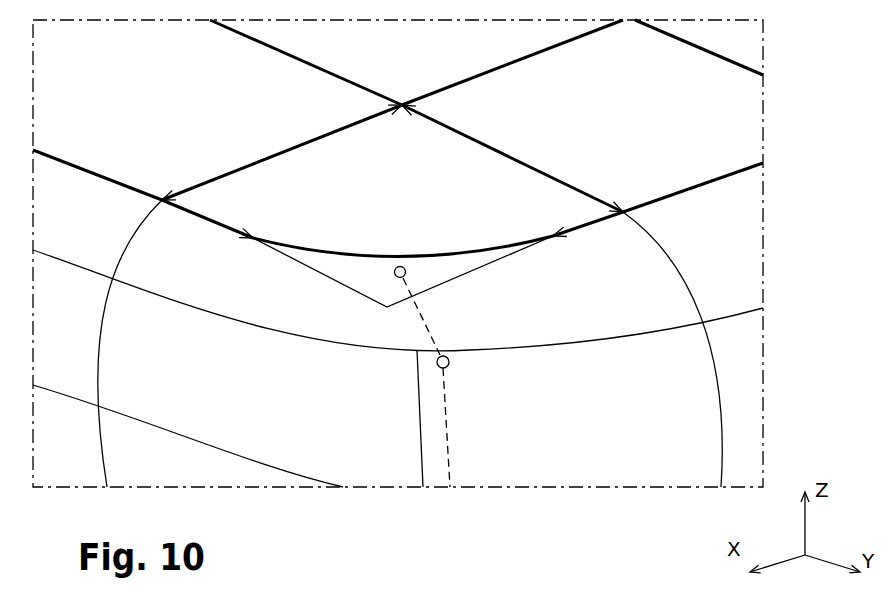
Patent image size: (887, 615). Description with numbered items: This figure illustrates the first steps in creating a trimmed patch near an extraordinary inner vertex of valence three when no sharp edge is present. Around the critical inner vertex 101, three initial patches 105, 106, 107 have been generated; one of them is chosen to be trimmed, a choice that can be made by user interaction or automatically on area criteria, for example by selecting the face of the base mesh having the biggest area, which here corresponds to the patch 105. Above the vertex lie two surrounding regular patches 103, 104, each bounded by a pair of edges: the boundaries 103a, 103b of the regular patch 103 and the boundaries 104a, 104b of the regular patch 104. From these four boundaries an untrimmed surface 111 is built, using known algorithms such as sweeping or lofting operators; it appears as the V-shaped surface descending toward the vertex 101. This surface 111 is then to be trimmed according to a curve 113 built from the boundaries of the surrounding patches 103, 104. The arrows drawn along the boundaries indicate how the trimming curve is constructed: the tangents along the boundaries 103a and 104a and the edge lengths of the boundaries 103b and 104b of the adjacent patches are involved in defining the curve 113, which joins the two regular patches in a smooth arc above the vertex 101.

The vertex 101 is at (407, 272).
The regular patch 103 is at (187, 119).
The boundary of regular patch 103a is at (107, 177).
The boundary of regular patch 103b is at (300, 145).
The regular patch 104 is at (690, 62).
The boundary of regular patch 104a is at (708, 182).
The boundary of regular patch 104b is at (508, 152).
The initial patch 105 is at (398, 300).
The initial patch 106 is at (188, 436).
The initial patch 107 is at (511, 418).
The untrimmed surface 111 is at (490, 263).
The trimming curve 113 is at (333, 250).